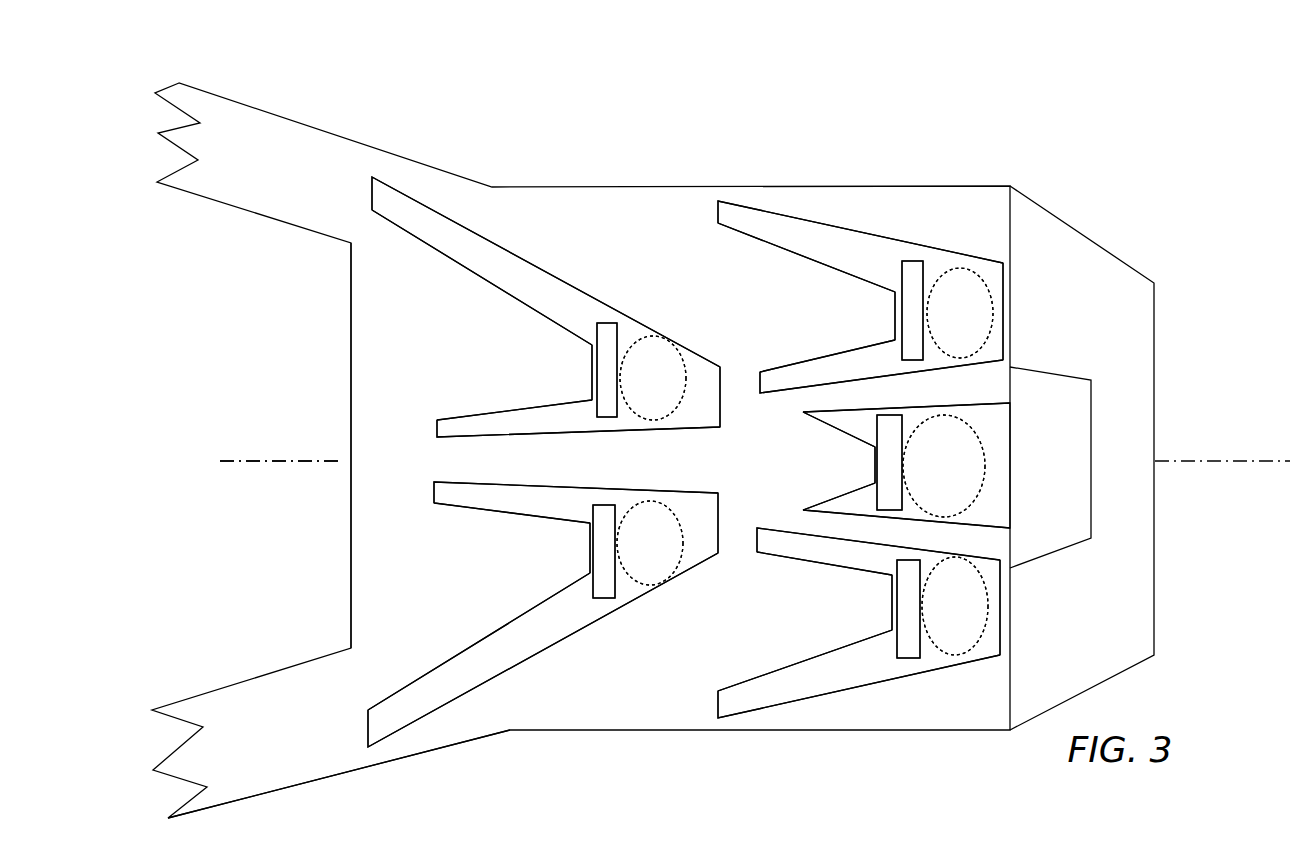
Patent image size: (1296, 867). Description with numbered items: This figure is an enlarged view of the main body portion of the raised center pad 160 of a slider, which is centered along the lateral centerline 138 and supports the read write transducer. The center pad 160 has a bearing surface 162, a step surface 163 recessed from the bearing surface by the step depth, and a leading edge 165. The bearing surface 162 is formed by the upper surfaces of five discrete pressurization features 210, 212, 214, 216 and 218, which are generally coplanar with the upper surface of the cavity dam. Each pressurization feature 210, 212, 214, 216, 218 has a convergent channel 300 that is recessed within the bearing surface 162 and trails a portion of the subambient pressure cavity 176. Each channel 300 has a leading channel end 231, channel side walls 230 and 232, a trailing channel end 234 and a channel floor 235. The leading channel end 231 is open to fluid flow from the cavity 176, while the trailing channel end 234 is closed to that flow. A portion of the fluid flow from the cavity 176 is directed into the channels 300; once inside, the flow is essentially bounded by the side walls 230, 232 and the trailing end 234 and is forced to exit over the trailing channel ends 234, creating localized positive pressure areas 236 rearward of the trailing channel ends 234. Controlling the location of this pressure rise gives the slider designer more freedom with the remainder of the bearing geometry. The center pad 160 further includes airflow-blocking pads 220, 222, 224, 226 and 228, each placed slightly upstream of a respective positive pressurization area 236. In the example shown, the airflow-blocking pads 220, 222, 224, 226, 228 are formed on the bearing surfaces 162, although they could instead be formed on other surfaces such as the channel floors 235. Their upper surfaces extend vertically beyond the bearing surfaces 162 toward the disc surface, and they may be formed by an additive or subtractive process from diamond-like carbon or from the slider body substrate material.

The lateral centerline 138 is at (312, 462).
The center pad 160 is at (868, 180).
The bearing surface 162 is at (805, 461).
The step surface 163 is at (339, 774).
The leading edge 165 is at (348, 590).
The subambient pressure cavity 176 is at (244, 462).
The pressurization feature 210 is at (594, 297).
The pressurization feature 212 is at (962, 248).
The pressurization feature 214 is at (1008, 400).
The pressurization feature 216 is at (955, 674).
The pressurization feature 218 is at (587, 636).
The airflow-blocking pad 220 is at (607, 330).
The airflow-blocking pad 222 is at (912, 260).
The airflow-blocking pad 224 is at (891, 420).
The airflow-blocking pad 226 is at (908, 660).
The airflow-blocking pad 228 is at (617, 606).
The channel side wall 230 is at (422, 243).
The leading channel end 231 is at (447, 338).
The channel side wall 232 is at (488, 408).
The trailing channel end 234 is at (592, 373).
The channel floor 235 is at (738, 459).
The localized positive pressure area 236 is at (651, 500).
The convergent channel 300 is at (436, 300).